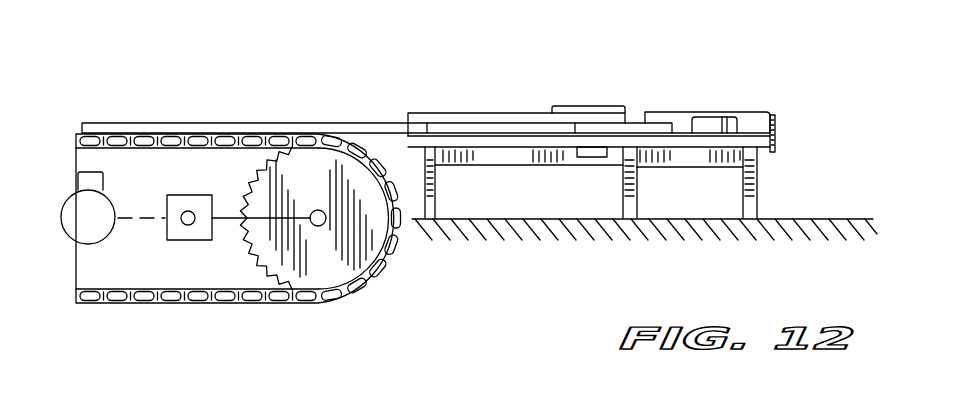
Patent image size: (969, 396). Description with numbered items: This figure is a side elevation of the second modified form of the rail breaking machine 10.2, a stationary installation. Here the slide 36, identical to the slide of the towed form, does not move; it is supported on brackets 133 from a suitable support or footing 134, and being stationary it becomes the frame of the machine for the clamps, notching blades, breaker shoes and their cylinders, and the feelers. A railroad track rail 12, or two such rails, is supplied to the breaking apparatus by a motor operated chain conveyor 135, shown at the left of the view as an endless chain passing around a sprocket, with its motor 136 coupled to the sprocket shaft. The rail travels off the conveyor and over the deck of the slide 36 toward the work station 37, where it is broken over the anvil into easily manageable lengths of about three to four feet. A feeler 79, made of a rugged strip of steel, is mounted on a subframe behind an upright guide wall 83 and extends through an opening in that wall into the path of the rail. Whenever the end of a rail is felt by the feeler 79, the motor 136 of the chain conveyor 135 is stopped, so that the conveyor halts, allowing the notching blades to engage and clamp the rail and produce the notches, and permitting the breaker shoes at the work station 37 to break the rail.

The railroad track rail 12 is at (107, 128).
The motor operated chain conveyor 135 is at (198, 138).
The motor 136 is at (93, 238).
The machine 10.2 is at (557, 90).
The slide 36 is at (450, 113).
The work station 37 is at (593, 102).
The feeler 79 is at (720, 130).
The upright guide wall 83 is at (753, 117).
The bracket 133 is at (757, 188).
The footing 134 is at (818, 217).